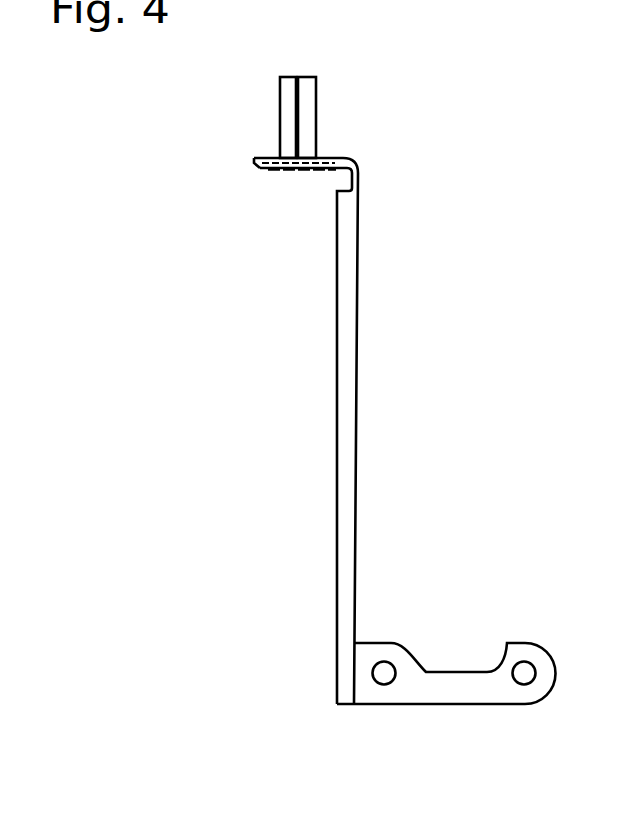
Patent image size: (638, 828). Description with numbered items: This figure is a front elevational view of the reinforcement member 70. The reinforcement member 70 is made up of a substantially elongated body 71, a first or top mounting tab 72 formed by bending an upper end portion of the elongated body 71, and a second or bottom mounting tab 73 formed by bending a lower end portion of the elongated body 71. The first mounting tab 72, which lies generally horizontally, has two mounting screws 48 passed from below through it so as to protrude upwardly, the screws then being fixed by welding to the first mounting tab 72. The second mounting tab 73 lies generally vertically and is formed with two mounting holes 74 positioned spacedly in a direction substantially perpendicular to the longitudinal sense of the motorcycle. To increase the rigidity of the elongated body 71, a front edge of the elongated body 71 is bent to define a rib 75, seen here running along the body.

The mounting screws 48 is at (289, 80).
The reinforcement member 70 is at (359, 359).
The elongated body 71 is at (357, 415).
The first mounting tab 72 is at (333, 157).
The second mounting tab 73 is at (450, 697).
The mounting holes 74 is at (522, 670).
The rib 75 is at (337, 442).